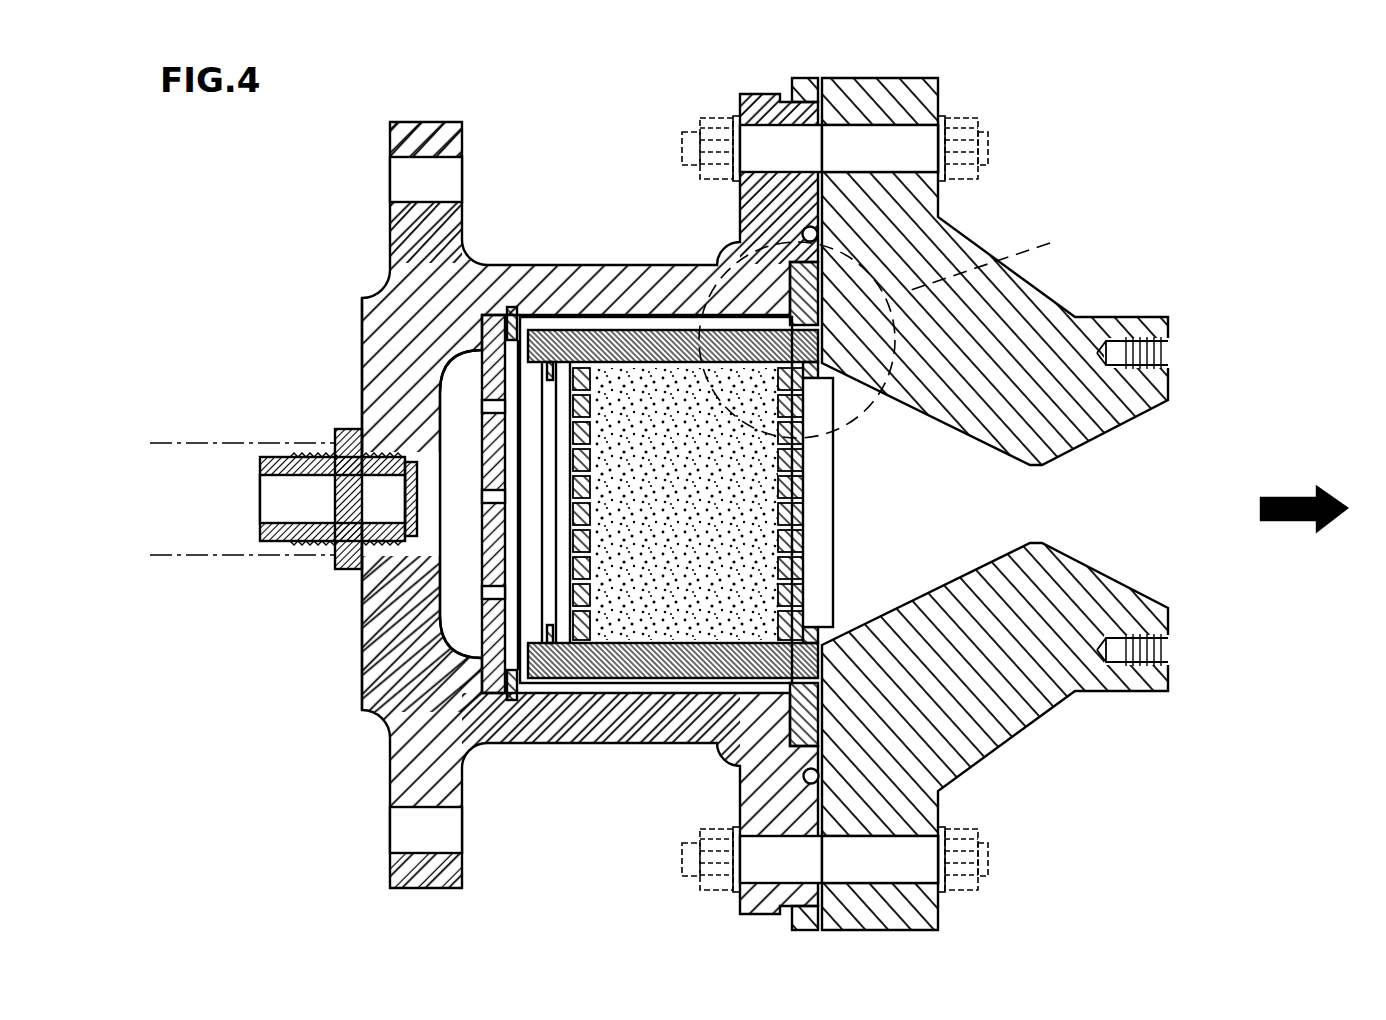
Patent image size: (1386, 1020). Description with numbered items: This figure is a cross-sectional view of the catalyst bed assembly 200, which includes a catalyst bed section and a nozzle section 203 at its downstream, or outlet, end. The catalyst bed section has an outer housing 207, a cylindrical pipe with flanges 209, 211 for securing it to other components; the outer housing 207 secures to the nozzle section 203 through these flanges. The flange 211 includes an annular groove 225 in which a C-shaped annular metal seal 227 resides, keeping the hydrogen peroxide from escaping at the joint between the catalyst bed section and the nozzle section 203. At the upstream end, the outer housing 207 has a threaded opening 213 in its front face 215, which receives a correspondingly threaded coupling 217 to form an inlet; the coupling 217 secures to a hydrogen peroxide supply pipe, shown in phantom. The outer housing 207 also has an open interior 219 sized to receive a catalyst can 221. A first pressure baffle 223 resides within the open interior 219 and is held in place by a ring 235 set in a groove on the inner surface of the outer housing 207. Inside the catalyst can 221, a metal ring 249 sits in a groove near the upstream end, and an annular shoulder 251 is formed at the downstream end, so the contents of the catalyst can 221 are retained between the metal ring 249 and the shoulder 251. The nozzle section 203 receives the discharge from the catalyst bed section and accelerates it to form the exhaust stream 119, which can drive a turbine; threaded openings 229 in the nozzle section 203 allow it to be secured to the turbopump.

The catalyst bed assembly 200 is at (1224, 173).
The nozzle section 203 is at (1122, 686).
The outer housing 207 is at (405, 742).
The flange 209 is at (456, 122).
The flange 211 is at (770, 93).
The threaded opening 213 is at (296, 563).
The front face 215 is at (360, 316).
The threaded coupling 217 is at (268, 462).
The open interior 219 is at (452, 524).
The catalyst can 221 is at (660, 340).
The first pressure baffle 223 is at (512, 318).
The annular groove 225 is at (800, 748).
The annular metal seal 227 is at (816, 238).
The threaded openings 229 is at (1170, 648).
The ring 235 is at (497, 696).
The metal ring 249 is at (580, 645).
The annular shoulder 251 is at (800, 527).
The exhaust stream 119 is at (1283, 496).